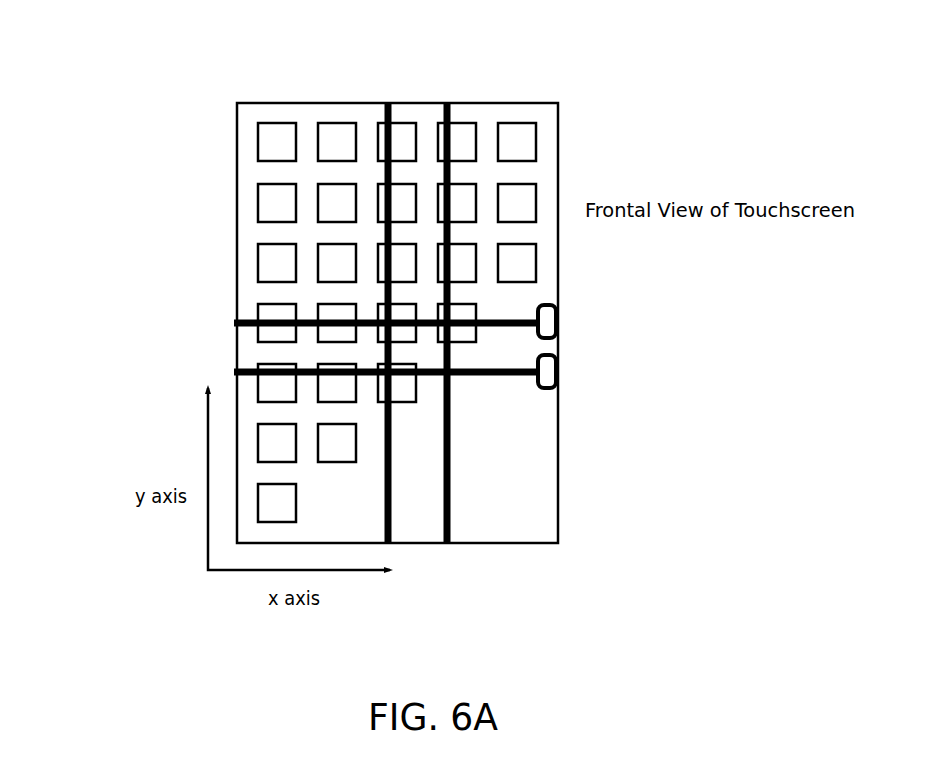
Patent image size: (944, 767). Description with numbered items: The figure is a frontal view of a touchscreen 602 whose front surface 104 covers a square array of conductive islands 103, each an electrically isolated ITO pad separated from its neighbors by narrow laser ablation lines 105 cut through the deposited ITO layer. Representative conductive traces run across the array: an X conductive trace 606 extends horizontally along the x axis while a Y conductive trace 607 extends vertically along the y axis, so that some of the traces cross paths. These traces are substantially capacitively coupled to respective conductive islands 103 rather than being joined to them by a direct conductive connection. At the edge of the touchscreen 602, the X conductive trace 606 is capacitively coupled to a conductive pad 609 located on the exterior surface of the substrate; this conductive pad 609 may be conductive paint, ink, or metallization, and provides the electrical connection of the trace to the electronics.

The conductive island 103 is at (262, 130).
The front surface 104 is at (510, 456).
The laser ablation line 105 is at (367, 142).
The touchscreen 602 is at (540, 100).
The X conductive trace 606 is at (238, 323).
The Y conductive trace 607 is at (390, 540).
The conductive pad 609 is at (558, 304).